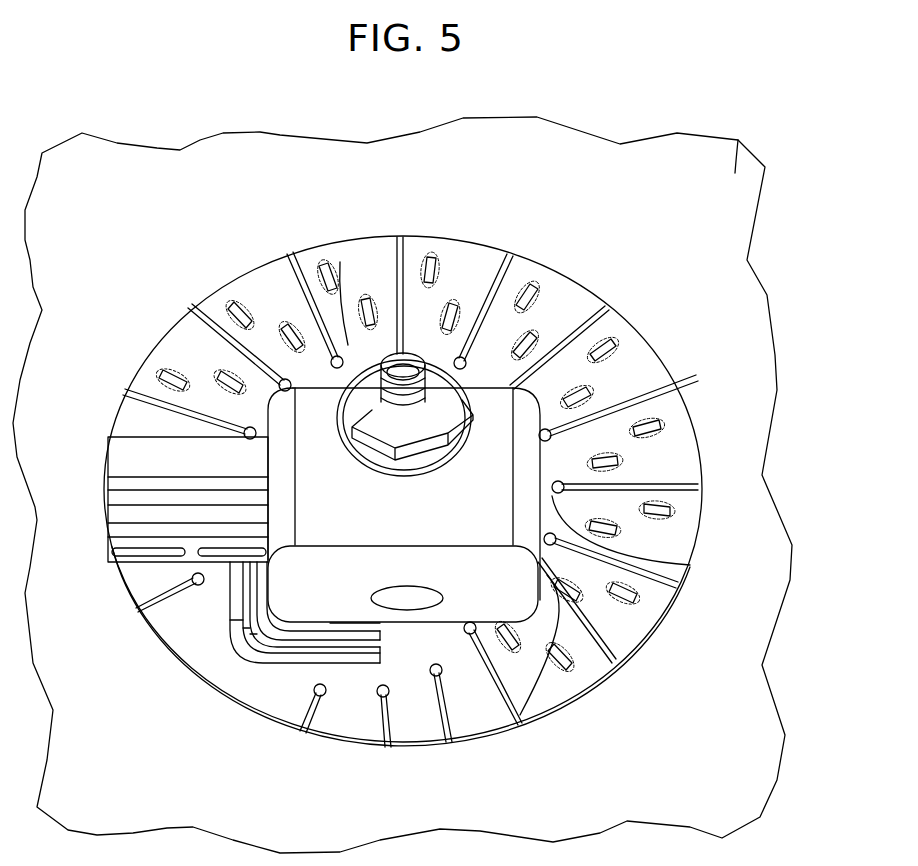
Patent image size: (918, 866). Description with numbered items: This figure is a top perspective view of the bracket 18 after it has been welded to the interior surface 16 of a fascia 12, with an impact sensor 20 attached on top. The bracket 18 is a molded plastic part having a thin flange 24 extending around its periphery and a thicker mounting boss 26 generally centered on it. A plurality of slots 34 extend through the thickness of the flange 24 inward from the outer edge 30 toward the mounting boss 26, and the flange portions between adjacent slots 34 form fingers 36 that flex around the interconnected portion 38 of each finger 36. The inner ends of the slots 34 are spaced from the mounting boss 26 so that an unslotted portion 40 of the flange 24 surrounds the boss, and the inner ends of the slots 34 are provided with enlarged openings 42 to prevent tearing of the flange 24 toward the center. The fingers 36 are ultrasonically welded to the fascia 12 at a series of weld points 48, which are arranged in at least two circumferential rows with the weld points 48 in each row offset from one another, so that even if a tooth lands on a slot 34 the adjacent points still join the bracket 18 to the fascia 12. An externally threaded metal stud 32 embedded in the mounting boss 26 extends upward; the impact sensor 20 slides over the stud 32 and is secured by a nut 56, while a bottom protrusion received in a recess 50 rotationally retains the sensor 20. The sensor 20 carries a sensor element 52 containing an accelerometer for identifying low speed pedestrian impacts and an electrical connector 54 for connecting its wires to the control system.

The fascia 12 is at (678, 132).
The interior surface 16 is at (738, 140).
The bracket 18 is at (199, 248).
The impact sensor 20 is at (630, 643).
The flange 24 is at (252, 262).
The mounting boss 26 is at (240, 603).
The outer edge 30 is at (700, 518).
The stud 32 is at (412, 366).
The slots 34 is at (653, 480).
The fingers 36 is at (613, 377).
The interconnected portion 38 is at (487, 375).
The unslotted portion 40 is at (640, 555).
The enlarged openings 42 is at (560, 495).
The weld points 48 is at (572, 392).
The recess 50 is at (303, 640).
The sensor element 52 is at (455, 570).
The electrical connector 54 is at (137, 435).
The nut 56 is at (378, 362).